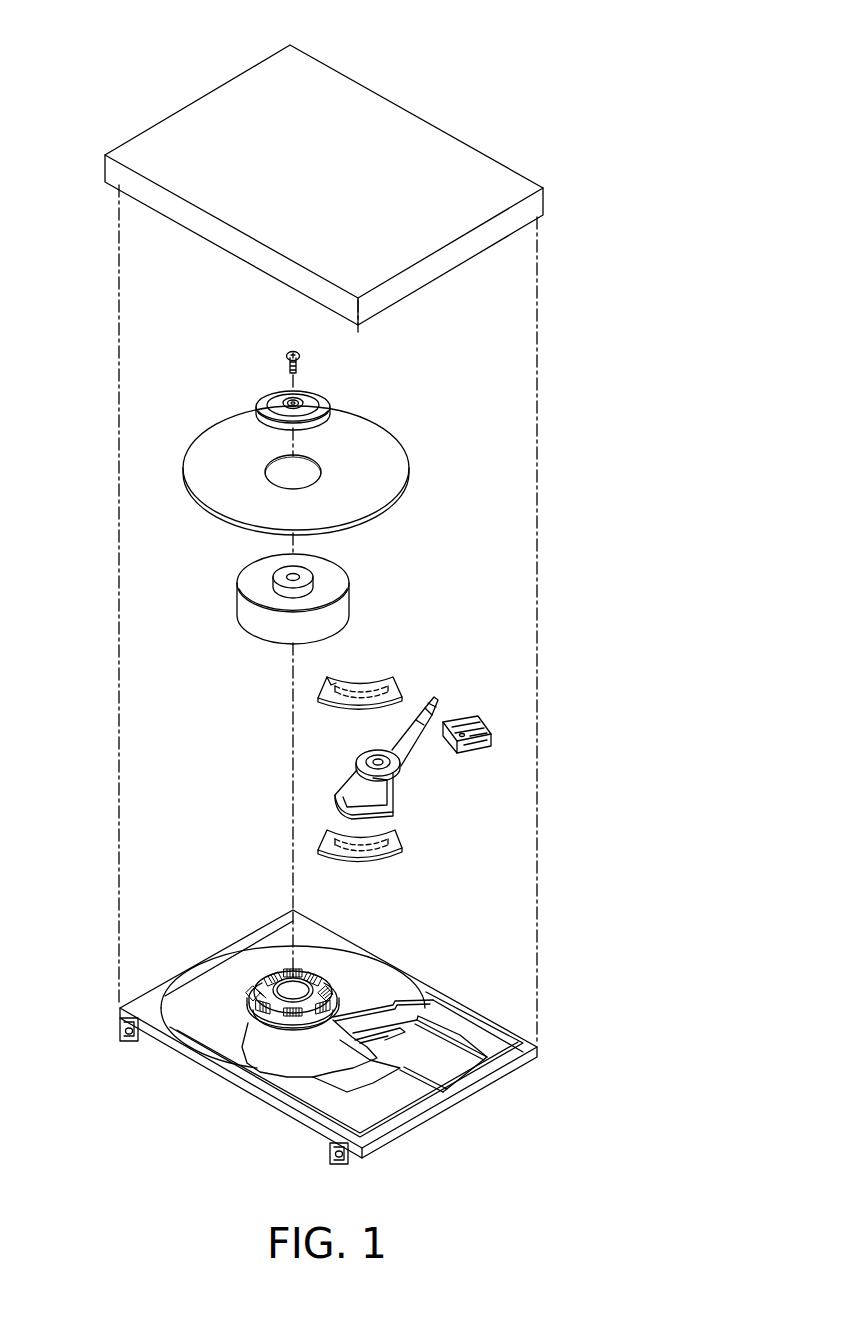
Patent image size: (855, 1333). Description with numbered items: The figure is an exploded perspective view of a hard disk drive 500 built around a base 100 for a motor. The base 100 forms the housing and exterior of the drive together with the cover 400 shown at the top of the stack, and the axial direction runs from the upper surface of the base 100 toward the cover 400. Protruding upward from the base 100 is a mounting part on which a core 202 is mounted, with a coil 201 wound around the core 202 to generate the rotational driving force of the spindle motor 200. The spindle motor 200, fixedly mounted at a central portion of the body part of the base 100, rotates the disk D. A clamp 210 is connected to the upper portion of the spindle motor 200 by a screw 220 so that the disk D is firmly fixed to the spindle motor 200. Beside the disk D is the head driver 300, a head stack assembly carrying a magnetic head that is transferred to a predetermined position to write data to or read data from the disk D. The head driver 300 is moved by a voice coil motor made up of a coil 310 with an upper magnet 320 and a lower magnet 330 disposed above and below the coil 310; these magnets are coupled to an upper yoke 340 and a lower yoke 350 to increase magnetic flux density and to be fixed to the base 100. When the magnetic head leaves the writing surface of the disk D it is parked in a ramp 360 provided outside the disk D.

The hard disk drive 500 is at (154, 28).
The cover 400 is at (415, 142).
The screw 220 is at (300, 368).
The clamp 210 is at (324, 415).
The disk D is at (388, 477).
The spindle motor 200 is at (342, 607).
The head driver 300 is at (381, 758).
The coil 310 is at (352, 778).
The upper magnet 320 is at (327, 679).
The upper yoke 340 is at (338, 703).
The lower magnet 330 is at (338, 820).
The lower yoke 350 is at (323, 842).
The ramp 360 is at (473, 725).
The base 100 is at (420, 971).
The coil 201 is at (263, 982).
The core 202 is at (270, 1010).